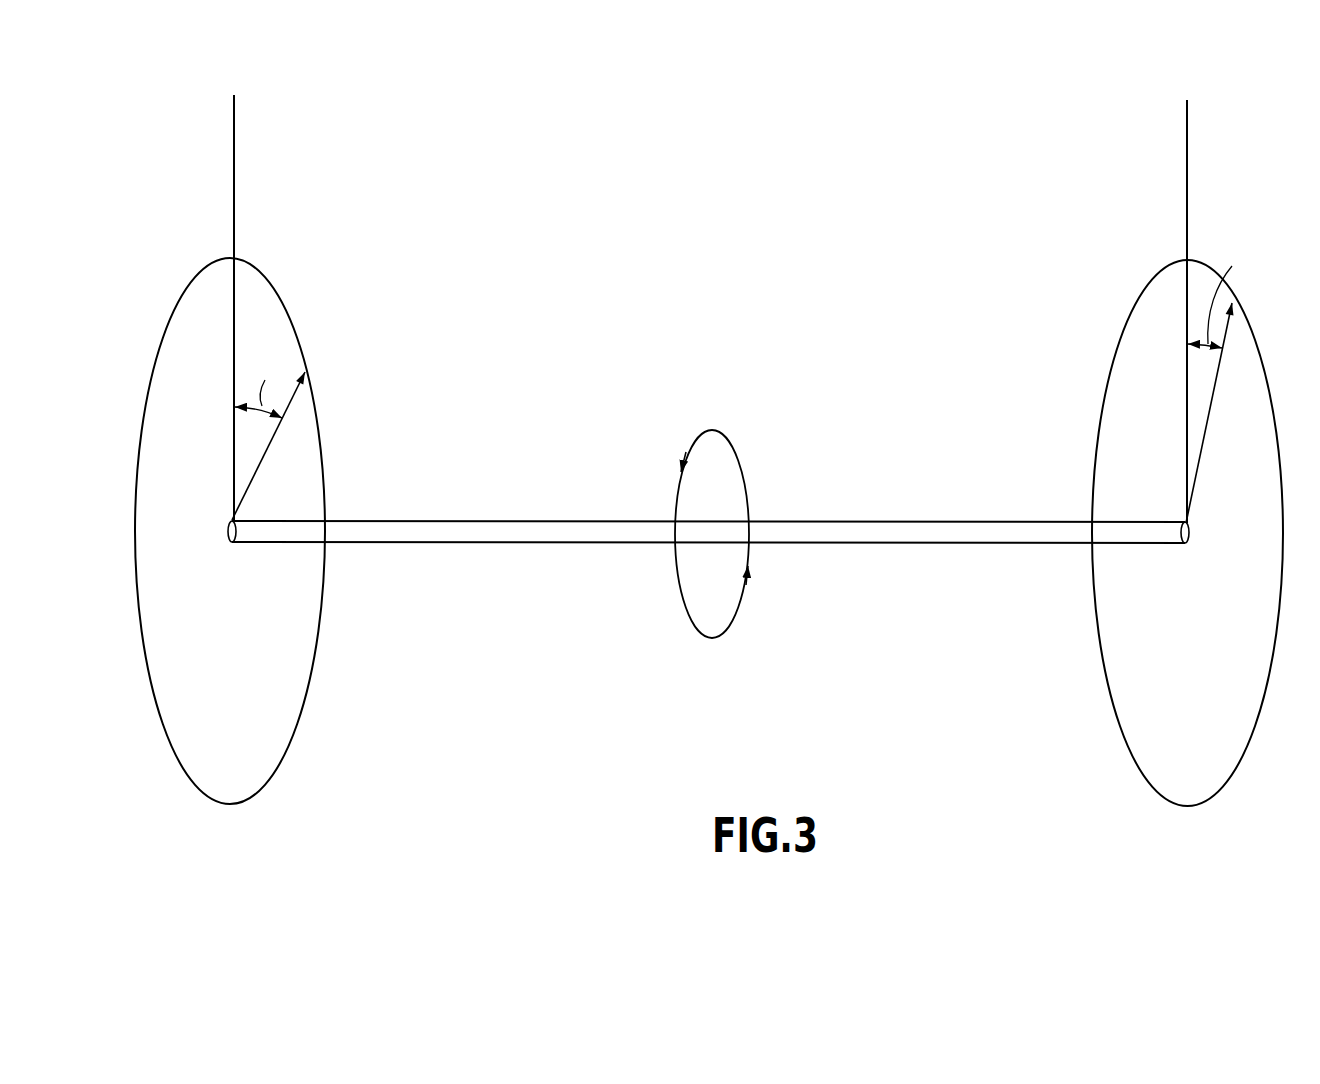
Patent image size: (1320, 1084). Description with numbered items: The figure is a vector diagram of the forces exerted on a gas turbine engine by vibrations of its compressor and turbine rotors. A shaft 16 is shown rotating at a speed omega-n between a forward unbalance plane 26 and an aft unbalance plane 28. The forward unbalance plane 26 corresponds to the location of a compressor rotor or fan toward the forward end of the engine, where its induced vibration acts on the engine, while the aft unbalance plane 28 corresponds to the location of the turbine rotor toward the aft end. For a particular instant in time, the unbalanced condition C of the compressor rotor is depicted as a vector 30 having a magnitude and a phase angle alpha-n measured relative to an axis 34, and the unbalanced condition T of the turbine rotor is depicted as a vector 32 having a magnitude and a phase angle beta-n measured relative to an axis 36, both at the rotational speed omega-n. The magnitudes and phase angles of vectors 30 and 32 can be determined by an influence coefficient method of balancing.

The shaft 16 is at (492, 543).
The forward unbalance plane 26 is at (228, 805).
The aft unbalance plane 28 is at (1148, 787).
The vector 30 is at (294, 400).
The vector 32 is at (1227, 333).
The axis 34 is at (234, 140).
The axis 36 is at (1188, 142).